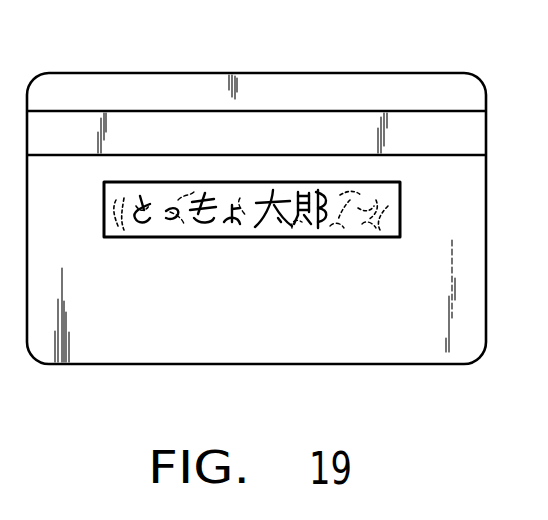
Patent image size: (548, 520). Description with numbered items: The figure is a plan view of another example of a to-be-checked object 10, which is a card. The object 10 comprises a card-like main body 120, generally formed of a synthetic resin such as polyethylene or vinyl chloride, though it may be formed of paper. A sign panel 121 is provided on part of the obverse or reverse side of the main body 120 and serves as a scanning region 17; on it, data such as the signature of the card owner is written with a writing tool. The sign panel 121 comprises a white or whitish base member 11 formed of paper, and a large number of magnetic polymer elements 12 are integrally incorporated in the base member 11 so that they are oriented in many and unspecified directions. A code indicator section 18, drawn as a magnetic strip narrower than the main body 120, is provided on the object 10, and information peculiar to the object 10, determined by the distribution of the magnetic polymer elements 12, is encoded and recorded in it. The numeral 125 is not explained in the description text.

The object 10 is at (132, 55).
The code indicator section 18 is at (294, 123).
The scanning region 17 is at (406, 196).
The sign panel 121 is at (227, 238).
The irregular marks 125 is at (137, 224).
The base member 11 is at (392, 221).
The magnetic polymer elements 12 is at (294, 227).
The main body 120 is at (411, 350).